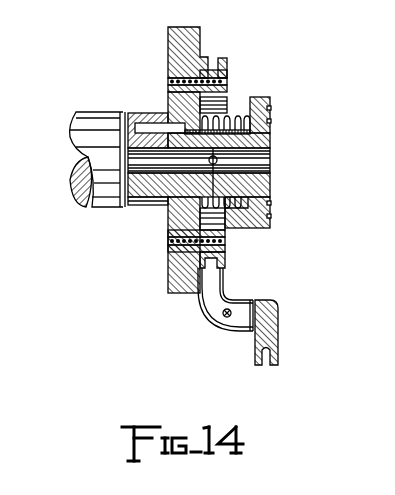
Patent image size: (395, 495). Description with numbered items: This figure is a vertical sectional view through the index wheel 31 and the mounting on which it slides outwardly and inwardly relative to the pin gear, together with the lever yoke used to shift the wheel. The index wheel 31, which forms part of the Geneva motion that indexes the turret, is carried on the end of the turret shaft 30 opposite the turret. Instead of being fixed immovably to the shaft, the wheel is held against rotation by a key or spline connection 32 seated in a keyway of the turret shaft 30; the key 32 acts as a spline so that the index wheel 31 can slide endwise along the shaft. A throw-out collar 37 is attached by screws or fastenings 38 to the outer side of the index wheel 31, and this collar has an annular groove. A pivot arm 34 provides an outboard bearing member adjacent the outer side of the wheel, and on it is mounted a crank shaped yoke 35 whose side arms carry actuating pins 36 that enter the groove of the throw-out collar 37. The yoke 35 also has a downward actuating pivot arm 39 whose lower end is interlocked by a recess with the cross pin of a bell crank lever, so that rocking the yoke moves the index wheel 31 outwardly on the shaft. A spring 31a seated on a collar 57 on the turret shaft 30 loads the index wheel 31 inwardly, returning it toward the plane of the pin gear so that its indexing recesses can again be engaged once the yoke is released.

The turret shaft 30 is at (86, 143).
The index wheel 31 is at (168, 64).
The spring 31a is at (233, 205).
The key or spline connection 32 is at (144, 115).
The pivot arm 34 is at (225, 318).
The crank shaped yoke 35 is at (241, 302).
The actuating pins 36 is at (228, 163).
The throw-out collar 37 is at (228, 66).
The screws or fastenings 38 is at (228, 84).
The downward actuating pivot arm 39 is at (279, 331).
The collar 57 is at (272, 133).